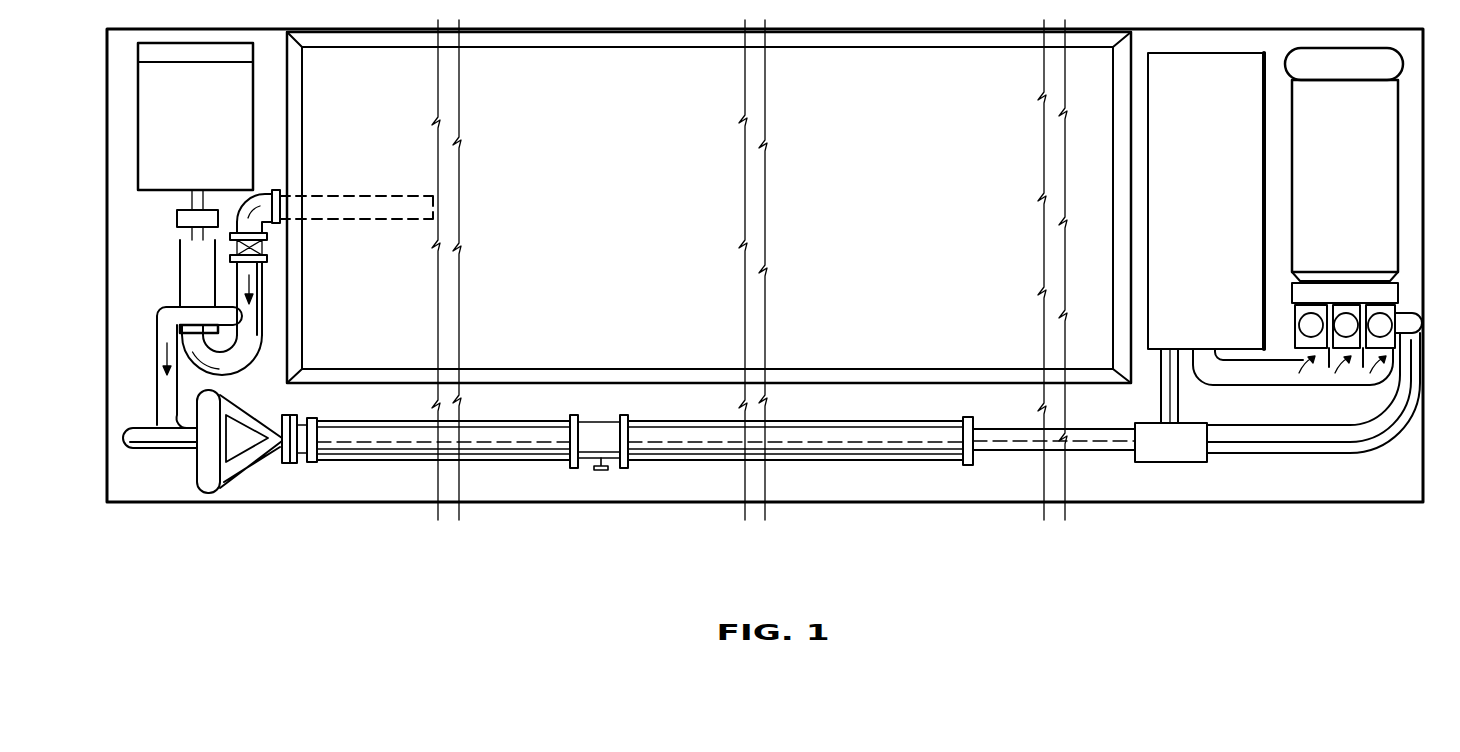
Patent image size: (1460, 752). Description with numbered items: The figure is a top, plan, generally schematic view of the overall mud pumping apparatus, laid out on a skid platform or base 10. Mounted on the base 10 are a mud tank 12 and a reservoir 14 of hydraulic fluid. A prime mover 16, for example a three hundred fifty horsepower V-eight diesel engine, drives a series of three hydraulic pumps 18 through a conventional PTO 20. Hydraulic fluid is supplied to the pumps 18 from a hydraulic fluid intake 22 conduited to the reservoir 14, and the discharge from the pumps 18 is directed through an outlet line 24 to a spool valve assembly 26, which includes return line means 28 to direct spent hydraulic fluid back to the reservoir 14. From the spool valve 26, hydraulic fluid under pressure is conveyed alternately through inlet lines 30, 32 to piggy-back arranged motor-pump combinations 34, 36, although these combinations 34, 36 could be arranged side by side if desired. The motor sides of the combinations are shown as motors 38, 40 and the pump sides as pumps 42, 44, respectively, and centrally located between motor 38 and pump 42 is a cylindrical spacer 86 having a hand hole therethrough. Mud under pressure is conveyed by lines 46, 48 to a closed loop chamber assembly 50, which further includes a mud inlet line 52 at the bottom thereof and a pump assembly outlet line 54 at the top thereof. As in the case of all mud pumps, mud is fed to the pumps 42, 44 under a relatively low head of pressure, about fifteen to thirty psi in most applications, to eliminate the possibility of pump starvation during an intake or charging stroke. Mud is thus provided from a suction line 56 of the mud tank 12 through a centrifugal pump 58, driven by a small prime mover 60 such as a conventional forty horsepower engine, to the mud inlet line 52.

The skid platform or base 10 is at (975, 493).
The mud tank 12 is at (582, 179).
The reservoir 14 is at (1190, 165).
The prime mover 16 is at (1331, 165).
The hydraulic pumps 18 is at (1343, 320).
The PTO 20 is at (1385, 293).
The hydraulic fluid intake 22 is at (1260, 377).
The outlet line 24 is at (1300, 448).
The spool valve assembly 26 is at (1200, 461).
The return line means 28 is at (1160, 396).
The inlet line 30 is at (1031, 426).
The inlet line 32 is at (1015, 430).
The motor-pump combination 34 is at (622, 415).
The motor-pump combination 36 is at (622, 415).
The motor 38 is at (795, 460).
The motor 40 is at (892, 444).
The pump 42 is at (443, 456).
The pump 44 is at (540, 445).
The line 46 is at (250, 454).
The line 48 is at (247, 407).
The closed loop chamber assembly 50 is at (200, 485).
The mud inlet line 52 is at (163, 393).
The pump assembly outlet line 54 is at (150, 450).
The suction line 56 is at (393, 193).
The centrifugal pump 58 is at (180, 273).
The small prime mover 60 is at (183, 130).
The cylindrical spacer 86 is at (612, 464).